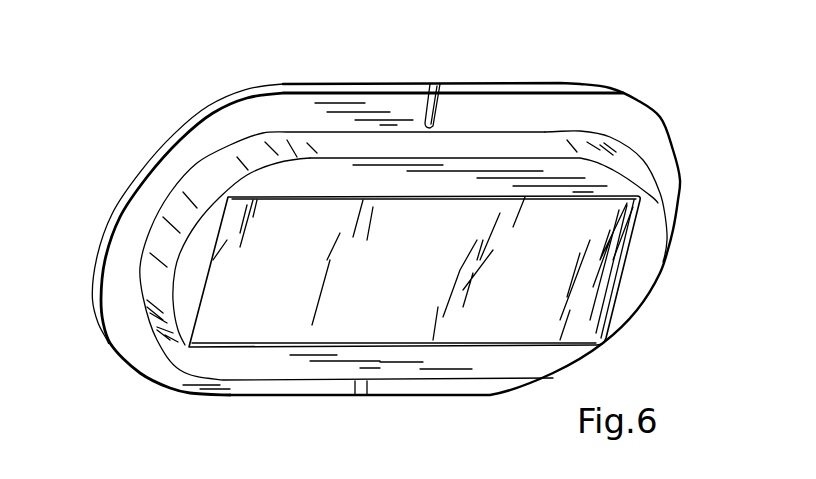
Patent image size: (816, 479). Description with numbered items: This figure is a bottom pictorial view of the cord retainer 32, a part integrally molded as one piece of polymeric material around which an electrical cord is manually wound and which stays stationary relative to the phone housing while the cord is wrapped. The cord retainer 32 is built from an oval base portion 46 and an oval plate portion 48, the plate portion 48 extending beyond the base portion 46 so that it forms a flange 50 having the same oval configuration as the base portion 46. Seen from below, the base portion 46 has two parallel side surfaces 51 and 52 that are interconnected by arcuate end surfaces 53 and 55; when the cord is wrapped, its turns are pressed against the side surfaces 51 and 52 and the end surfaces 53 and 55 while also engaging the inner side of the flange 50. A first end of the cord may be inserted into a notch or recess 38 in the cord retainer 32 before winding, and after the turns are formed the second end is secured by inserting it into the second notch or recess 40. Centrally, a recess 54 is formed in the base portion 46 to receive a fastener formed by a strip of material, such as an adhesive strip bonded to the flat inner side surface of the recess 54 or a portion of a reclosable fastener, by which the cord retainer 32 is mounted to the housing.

The cord retainer 32 is at (668, 115).
The notch or recess 38 is at (360, 397).
The second notch or recess 40 is at (437, 86).
The base portion 46 is at (292, 150).
The plate portion 48 is at (150, 167).
The flange 50 is at (98, 280).
The side surface 51 is at (525, 147).
The side surface 52 is at (438, 380).
The arcuate end surface 53 is at (153, 283).
The recess 54 is at (623, 278).
The arcuate end surface 55 is at (662, 206).